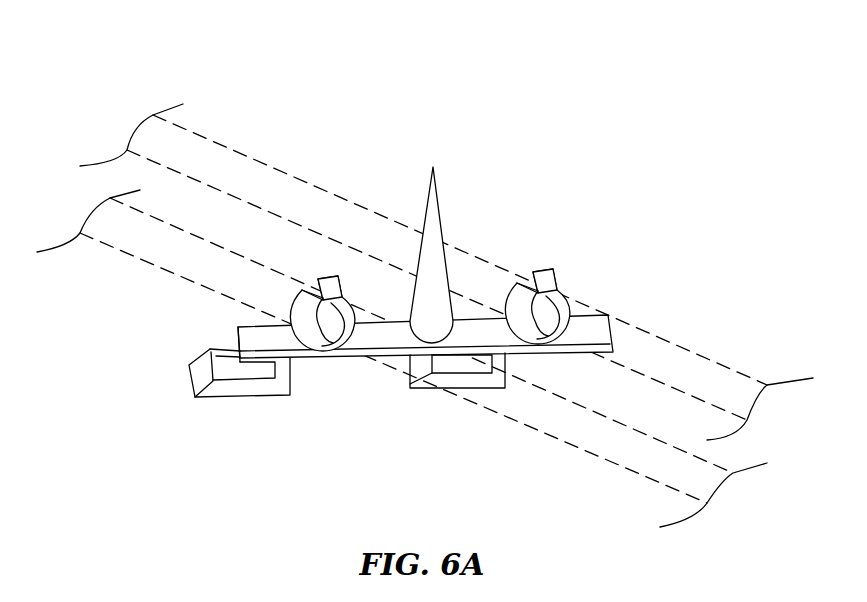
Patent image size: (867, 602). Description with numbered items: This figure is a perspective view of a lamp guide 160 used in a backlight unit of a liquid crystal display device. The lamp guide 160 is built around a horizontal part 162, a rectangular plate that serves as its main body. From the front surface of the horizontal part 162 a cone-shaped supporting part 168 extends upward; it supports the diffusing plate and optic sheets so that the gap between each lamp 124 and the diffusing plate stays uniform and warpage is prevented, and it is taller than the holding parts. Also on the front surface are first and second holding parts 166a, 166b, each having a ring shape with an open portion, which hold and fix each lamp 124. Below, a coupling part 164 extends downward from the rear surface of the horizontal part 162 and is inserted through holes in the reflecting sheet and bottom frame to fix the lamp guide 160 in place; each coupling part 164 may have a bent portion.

The lamp 124 is at (297, 188).
The lamp guide 160 is at (633, 103).
The horizontal part 162 is at (238, 331).
The coupling part 164 is at (236, 410).
The first holding part 166a is at (325, 278).
The second holding part 166b is at (548, 268).
The supporting part 168 is at (433, 227).